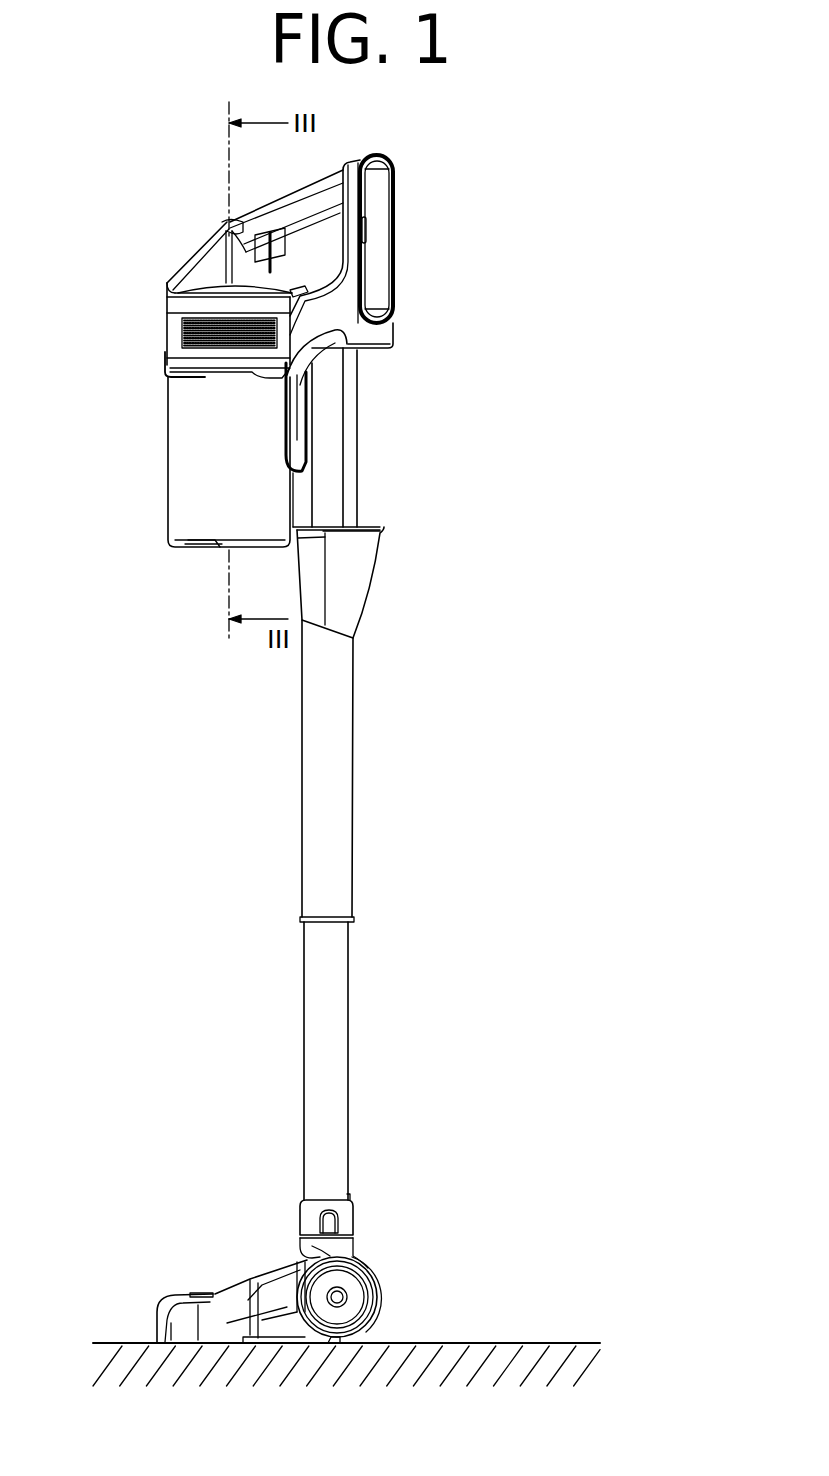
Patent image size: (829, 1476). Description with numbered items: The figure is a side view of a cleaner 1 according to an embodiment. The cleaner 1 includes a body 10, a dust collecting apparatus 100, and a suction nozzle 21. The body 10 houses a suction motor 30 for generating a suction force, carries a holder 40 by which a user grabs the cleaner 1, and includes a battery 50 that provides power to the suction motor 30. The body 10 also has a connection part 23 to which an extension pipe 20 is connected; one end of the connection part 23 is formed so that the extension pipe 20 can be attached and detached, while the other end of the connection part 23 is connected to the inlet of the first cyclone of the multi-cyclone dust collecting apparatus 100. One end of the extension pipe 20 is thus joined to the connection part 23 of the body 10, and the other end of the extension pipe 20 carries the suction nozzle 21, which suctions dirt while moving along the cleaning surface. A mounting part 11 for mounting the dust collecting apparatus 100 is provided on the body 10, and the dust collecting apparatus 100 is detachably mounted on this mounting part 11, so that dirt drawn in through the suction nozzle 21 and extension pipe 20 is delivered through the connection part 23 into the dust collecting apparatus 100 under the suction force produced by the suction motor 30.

The cleaner 1 is at (396, 126).
The body 10 is at (190, 222).
The mounting part 11 is at (183, 370).
The extension pipe 20 is at (343, 794).
The suction nozzle 21 is at (393, 1272).
The connection part 23 is at (348, 443).
The suction motor 30 is at (176, 339).
The holder 40 is at (288, 206).
The battery 50 is at (395, 261).
The dust collecting apparatus 100 is at (148, 455).